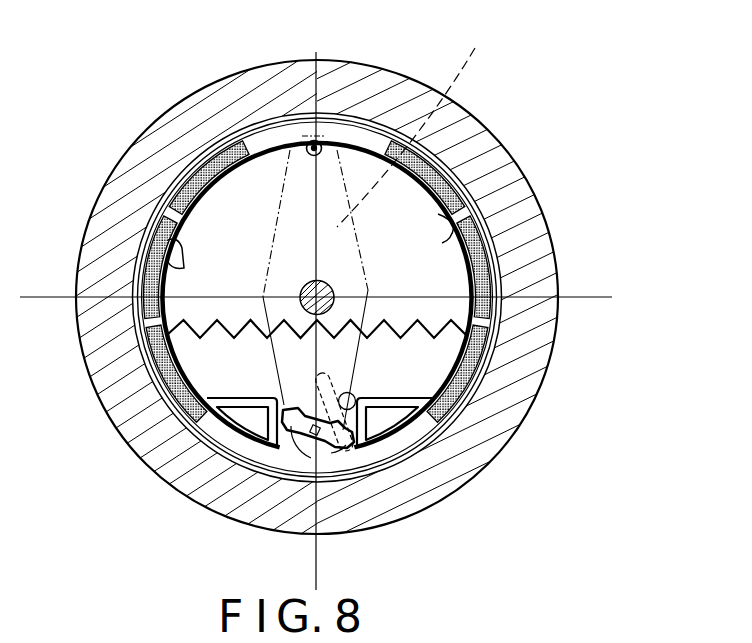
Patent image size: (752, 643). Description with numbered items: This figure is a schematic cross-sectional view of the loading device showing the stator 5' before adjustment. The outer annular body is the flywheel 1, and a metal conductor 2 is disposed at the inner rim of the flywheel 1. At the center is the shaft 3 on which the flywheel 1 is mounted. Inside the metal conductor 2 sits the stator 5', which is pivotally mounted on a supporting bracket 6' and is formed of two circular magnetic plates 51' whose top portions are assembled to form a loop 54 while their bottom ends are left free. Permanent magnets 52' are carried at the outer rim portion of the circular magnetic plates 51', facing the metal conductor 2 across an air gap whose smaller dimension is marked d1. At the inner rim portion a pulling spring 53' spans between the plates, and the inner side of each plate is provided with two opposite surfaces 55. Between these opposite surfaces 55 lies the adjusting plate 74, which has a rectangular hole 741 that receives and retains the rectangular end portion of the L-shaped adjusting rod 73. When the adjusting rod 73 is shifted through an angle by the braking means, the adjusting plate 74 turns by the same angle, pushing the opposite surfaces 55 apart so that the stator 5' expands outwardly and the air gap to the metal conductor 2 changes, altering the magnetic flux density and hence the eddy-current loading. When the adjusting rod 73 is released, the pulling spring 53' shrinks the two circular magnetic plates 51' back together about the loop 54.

The flywheel 1 is at (185, 132).
The metal conductor 2 is at (243, 133).
The shaft 3 is at (337, 282).
The stator 5' is at (317, 297).
The supporting bracket 6' is at (416, 124).
The circular magnetic plates 51' is at (312, 241).
The permanent magnet 52' is at (320, 147).
The pulling spring 53' is at (249, 395).
The loop 54 is at (322, 140).
The opposite surfaces 55 is at (350, 392).
The adjusting rod 73 is at (318, 400).
The adjusting plate 74 is at (348, 440).
The rectangular hole 741 is at (302, 440).
The air gap dimension d1 is at (478, 377).